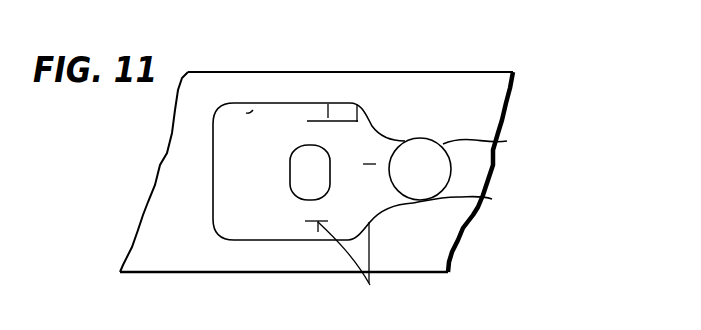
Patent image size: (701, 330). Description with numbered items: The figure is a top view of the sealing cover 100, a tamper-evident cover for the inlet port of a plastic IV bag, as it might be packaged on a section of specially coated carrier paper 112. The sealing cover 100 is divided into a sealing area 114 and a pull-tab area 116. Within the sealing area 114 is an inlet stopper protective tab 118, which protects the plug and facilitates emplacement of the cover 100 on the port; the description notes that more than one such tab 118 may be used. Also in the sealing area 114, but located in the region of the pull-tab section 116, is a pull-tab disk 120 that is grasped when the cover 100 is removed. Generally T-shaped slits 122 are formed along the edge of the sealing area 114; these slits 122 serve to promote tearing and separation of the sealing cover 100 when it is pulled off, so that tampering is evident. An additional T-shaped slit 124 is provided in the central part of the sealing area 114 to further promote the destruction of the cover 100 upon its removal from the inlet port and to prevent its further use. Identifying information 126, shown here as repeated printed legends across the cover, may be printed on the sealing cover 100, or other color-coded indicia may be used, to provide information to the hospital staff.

The sealing cover 100 is at (433, 76).
The carrier paper 112 is at (513, 97).
The sealing area 114 is at (315, 261).
The pull-tab area 116 is at (433, 231).
The inlet stopper protective tab 118 is at (291, 180).
The pull-tab disk 120 is at (446, 151).
The T-shaped slits 122 is at (349, 110).
The additional T-shaped slit 124 is at (374, 164).
The identifying information 126 is at (253, 110).